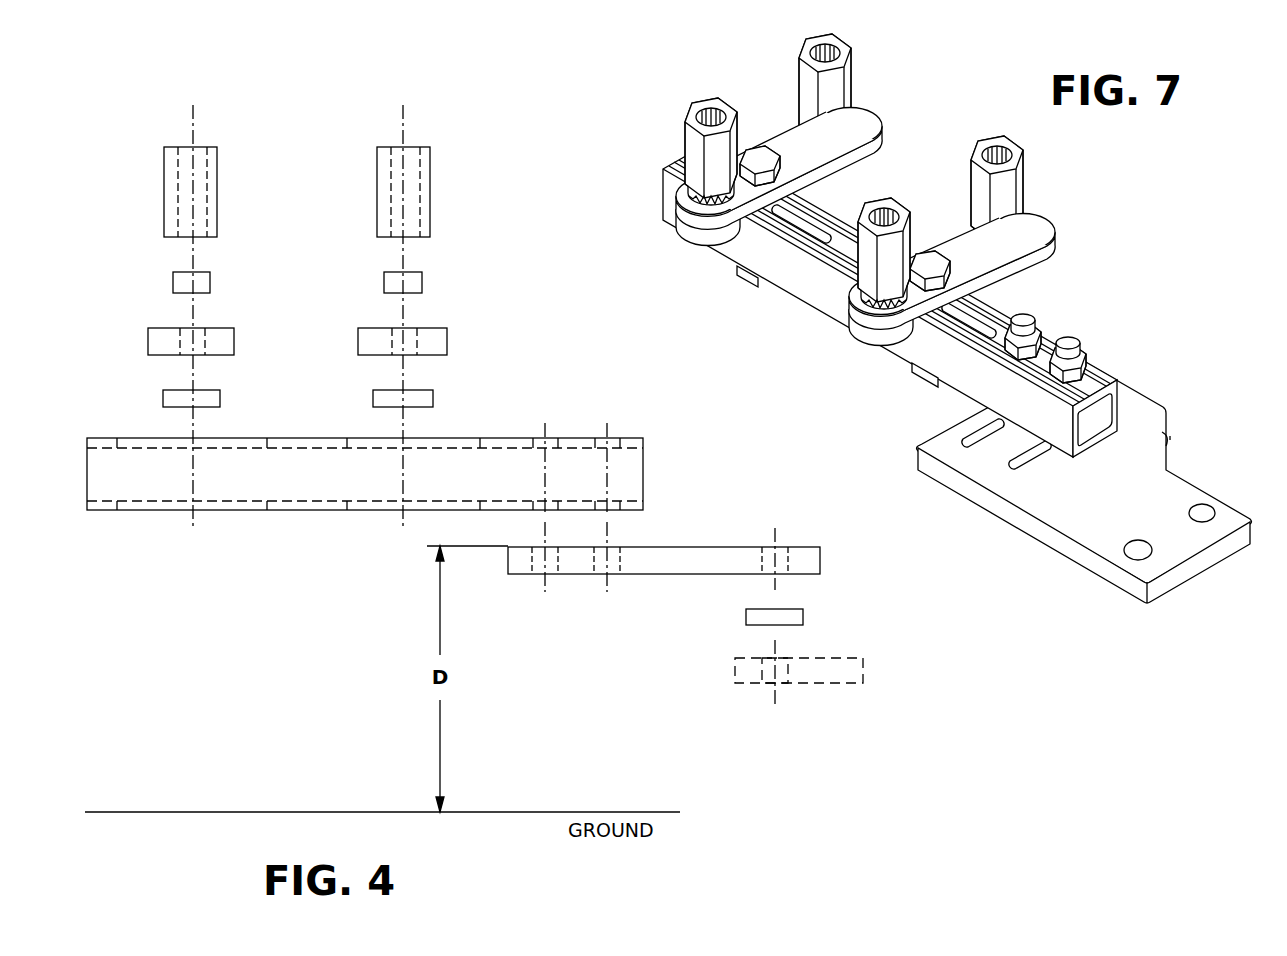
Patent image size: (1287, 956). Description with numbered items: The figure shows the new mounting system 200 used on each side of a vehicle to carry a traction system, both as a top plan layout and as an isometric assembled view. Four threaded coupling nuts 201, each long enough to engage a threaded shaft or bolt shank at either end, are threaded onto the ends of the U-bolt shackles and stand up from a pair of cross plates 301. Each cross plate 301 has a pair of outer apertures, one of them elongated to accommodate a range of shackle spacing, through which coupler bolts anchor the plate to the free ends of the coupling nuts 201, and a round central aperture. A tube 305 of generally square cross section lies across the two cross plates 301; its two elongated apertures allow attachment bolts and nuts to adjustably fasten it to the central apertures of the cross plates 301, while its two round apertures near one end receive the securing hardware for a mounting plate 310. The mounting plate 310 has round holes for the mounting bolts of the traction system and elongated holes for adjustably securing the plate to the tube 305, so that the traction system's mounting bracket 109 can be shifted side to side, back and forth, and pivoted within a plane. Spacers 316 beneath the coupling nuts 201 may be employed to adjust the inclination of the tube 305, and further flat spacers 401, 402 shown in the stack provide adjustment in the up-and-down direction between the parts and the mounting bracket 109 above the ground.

In FIG. 4, the mounting bracket 109 is at (810, 672).
In FIG. 7, the mounting system 200 is at (957, 318).
In FIG. 7, the threaded coupling nut 201 is at (983, 177).
In FIG. 7, the cross plate 301 is at (868, 121).
In FIG. 4, the tube 305 is at (358, 477).
In FIG. 7, the tube 305 is at (825, 295).
In FIG. 4, the mounting plate 310 is at (718, 564).
In FIG. 7, the mounting plate 310 is at (1080, 503).
In FIG. 4, the spacer 316 is at (393, 281).
In FIG. 4, the washer 401 is at (383, 397).
In FIG. 4, the washer 402 is at (790, 615).